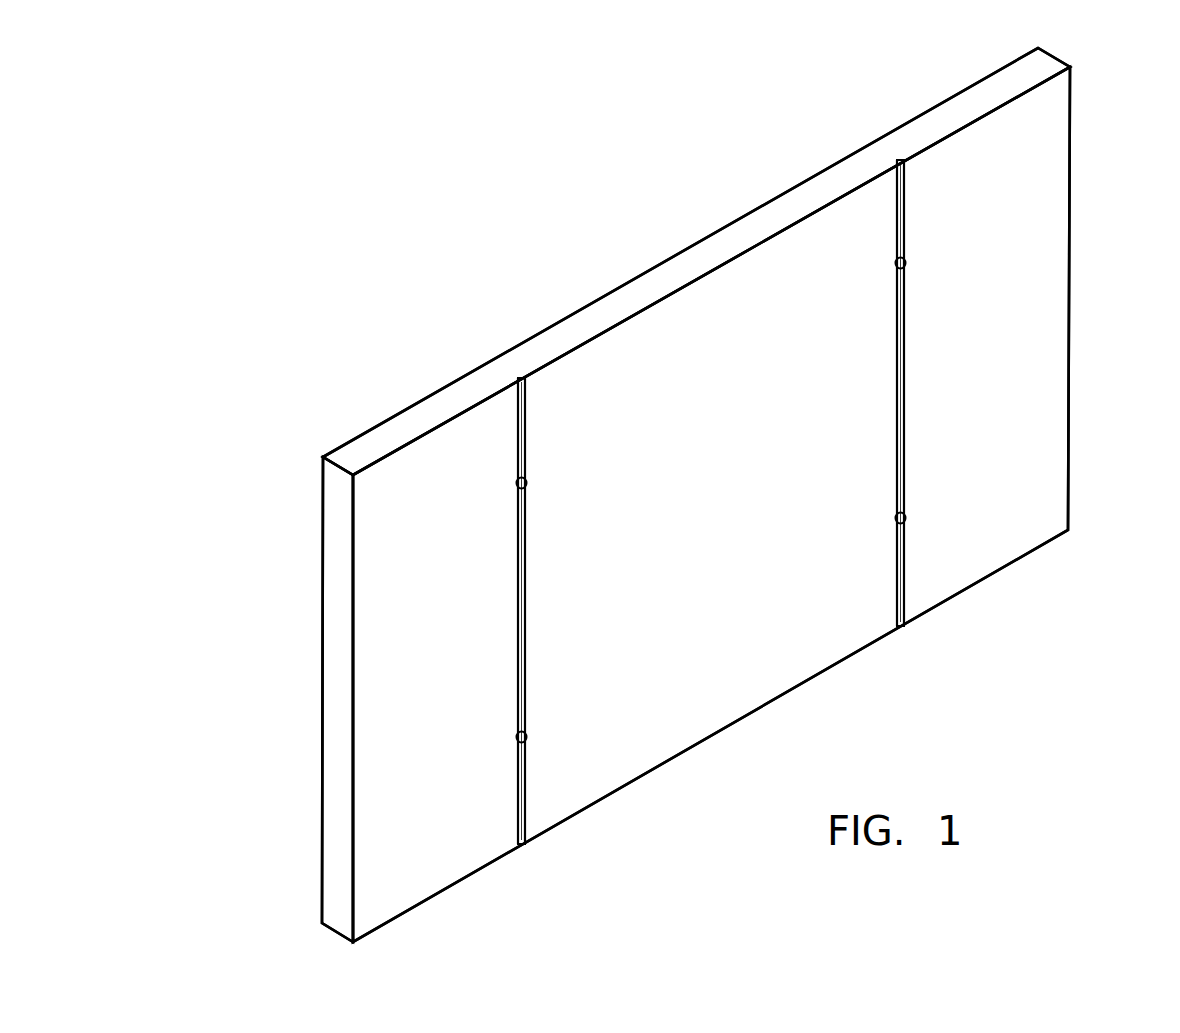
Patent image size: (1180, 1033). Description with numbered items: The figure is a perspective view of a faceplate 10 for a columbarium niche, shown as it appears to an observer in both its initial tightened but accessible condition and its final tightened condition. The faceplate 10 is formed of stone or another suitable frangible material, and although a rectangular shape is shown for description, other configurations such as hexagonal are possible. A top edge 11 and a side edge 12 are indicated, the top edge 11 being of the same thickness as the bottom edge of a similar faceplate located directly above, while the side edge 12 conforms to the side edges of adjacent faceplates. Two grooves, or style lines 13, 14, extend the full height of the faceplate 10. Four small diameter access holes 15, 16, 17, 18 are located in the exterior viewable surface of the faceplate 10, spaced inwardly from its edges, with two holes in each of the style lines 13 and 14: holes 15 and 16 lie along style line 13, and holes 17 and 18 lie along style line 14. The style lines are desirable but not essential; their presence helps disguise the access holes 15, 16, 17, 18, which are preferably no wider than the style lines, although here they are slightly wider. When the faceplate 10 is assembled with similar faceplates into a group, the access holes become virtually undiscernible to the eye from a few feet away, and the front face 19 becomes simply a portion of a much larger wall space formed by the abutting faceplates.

The faceplate 10 is at (567, 230).
The top edge 11 is at (682, 267).
The side edge 12 is at (338, 642).
The style line 13 is at (517, 422).
The style line 14 is at (907, 200).
The access hole 15 is at (520, 483).
The access hole 16 is at (520, 737).
The access hole 17 is at (900, 263).
The access hole 18 is at (900, 518).
The front face 19 is at (685, 668).